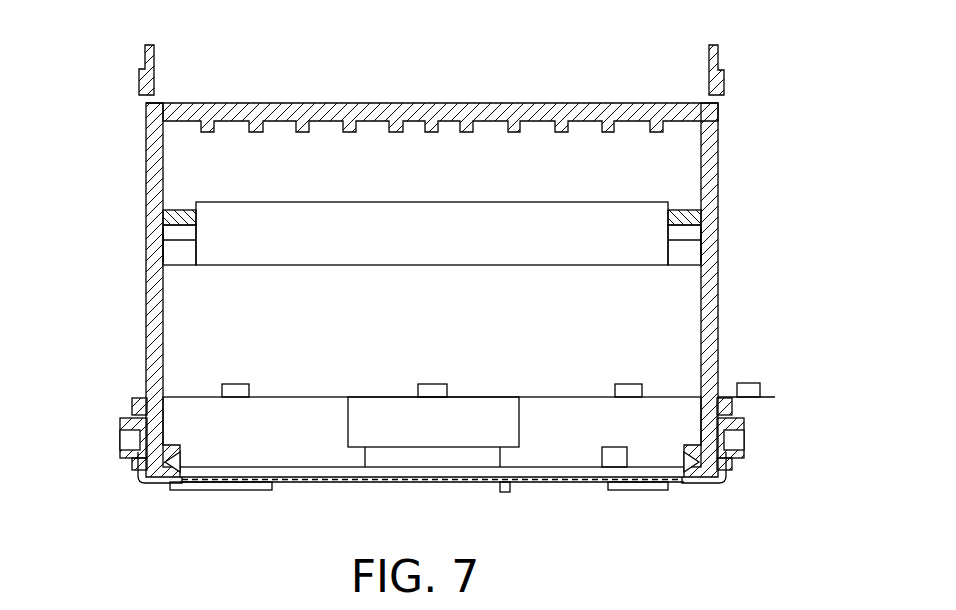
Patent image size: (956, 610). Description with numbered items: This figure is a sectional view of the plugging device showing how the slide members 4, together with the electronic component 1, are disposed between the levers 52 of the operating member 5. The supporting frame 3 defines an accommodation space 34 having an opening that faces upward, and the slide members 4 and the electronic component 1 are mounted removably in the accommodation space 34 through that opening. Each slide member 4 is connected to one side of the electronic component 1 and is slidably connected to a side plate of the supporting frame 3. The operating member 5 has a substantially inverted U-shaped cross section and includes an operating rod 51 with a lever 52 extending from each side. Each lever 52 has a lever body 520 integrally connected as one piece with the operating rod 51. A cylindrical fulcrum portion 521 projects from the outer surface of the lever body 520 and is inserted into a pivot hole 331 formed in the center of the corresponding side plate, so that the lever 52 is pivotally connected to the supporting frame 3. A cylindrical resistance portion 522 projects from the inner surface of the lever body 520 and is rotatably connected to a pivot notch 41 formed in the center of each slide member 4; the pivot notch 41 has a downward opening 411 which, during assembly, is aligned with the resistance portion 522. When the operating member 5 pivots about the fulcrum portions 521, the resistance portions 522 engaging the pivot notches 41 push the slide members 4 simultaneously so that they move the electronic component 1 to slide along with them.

The electronic component 1 is at (363, 225).
The supporting frame 3 is at (541, 484).
The accommodation space 34 is at (295, 415).
The pivot hole 331 is at (122, 409).
The slide member 4 is at (180, 207).
The pivot notch 41 is at (182, 233).
The downward opening 411 is at (183, 266).
The operating member 5 is at (433, 246).
The operating rod 51 is at (470, 112).
The lever 52 is at (145, 180).
The lever body 520 is at (155, 248).
The fulcrum portion 521 is at (118, 422).
The resistance portion 522 is at (170, 470).